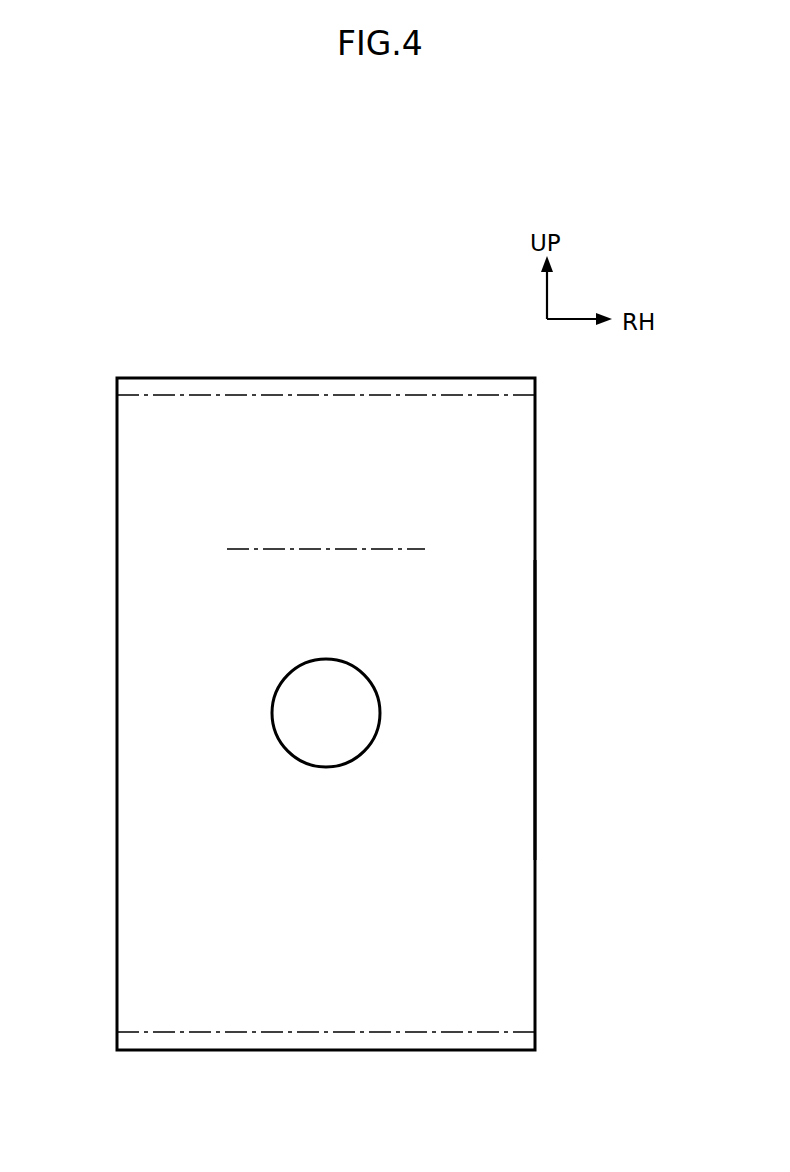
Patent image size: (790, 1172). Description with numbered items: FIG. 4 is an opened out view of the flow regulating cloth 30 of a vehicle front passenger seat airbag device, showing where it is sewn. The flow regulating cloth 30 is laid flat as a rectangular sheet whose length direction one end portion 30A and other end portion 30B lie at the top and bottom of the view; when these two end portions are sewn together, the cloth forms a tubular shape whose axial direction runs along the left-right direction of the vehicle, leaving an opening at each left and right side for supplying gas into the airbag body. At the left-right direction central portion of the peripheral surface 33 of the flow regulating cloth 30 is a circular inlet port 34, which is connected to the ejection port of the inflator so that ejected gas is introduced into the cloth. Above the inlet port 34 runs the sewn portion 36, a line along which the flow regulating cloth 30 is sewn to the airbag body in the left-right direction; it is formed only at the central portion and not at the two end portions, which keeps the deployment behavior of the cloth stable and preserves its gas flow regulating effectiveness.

The flow regulating cloth 30 is at (117, 378).
The length direction one end portion 30A is at (353, 1052).
The length direction other end portion 30B is at (322, 378).
The peripheral surface 33 is at (498, 715).
The inlet port 34 is at (350, 753).
The sewn portion 36 is at (298, 549).